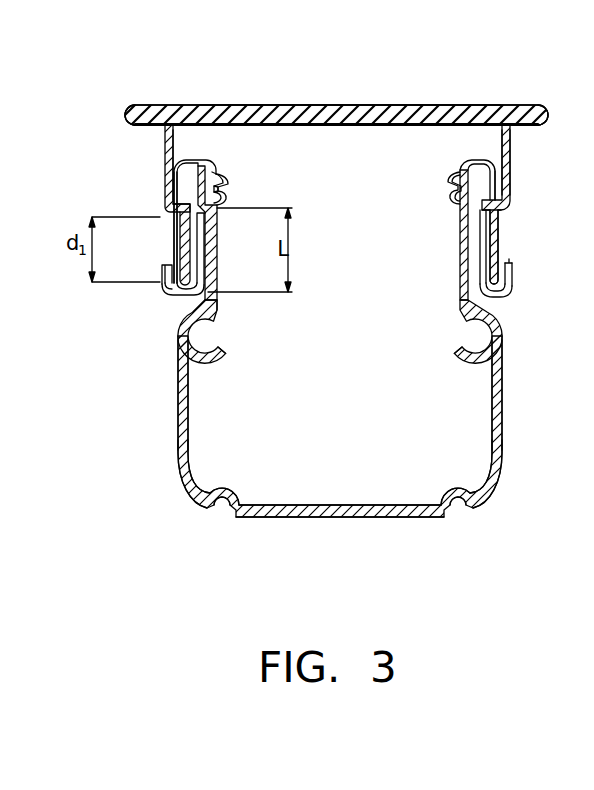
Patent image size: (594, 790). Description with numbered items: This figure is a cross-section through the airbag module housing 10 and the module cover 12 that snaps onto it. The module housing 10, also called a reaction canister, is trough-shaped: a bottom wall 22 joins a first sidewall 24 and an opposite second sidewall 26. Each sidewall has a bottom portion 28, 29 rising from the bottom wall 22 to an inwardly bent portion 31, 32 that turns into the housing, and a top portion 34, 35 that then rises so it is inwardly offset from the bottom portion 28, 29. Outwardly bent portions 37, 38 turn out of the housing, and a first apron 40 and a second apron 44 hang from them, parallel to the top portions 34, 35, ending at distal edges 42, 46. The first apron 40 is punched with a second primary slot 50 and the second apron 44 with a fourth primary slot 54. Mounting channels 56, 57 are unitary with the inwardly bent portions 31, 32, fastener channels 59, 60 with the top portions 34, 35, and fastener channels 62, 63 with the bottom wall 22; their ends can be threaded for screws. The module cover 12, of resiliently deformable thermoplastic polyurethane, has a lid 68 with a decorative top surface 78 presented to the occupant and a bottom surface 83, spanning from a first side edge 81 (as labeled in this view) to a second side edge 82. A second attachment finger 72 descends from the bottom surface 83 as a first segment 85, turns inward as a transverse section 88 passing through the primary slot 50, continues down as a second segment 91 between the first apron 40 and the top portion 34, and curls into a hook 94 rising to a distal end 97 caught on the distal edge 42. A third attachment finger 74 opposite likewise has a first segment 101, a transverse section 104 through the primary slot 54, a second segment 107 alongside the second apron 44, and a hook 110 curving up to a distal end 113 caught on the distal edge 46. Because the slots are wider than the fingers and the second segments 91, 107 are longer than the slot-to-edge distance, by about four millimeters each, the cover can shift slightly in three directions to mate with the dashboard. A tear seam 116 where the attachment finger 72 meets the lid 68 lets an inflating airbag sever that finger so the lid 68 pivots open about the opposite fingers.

The module housing 10 is at (313, 534).
The module cover 12 is at (295, 72).
The bottom wall 22 is at (347, 518).
The first sidewall 24 is at (177, 404).
The second sidewall 26 is at (503, 380).
The bottom portion 28 is at (178, 438).
The bottom portion 29 is at (505, 443).
The inwardly bent portion 31 is at (180, 340).
The inwardly bent portion 32 is at (504, 325).
The top portion 34 is at (219, 271).
The top portion 35 is at (459, 273).
The outwardly bent portion 37 is at (200, 161).
The outwardly bent portion 38 is at (477, 158).
The first apron 40 is at (174, 227).
The distal edge 42 is at (175, 296).
The second apron 44 is at (500, 248).
The distal edge 46 is at (503, 294).
The second primary slot 50 is at (163, 206).
The fourth primary slot 54 is at (500, 194).
The mounting channel 56 is at (224, 344).
The mounting channel 57 is at (456, 343).
The fastener channel 59 is at (228, 190).
The fastener channel 60 is at (452, 186).
The fastener channel 62 is at (225, 507).
The fastener channel 63 is at (470, 498).
The lid 68 is at (338, 104).
The second attachment finger 72 is at (162, 157).
The third attachment finger 74 is at (513, 157).
The top surface 78 is at (418, 104).
The left end 81 is at (125, 121).
The second side edge 82 is at (550, 112).
The bottom surface 83 is at (317, 127).
The first segment 85 is at (163, 180).
The transverse section 88 is at (223, 176).
The second segment 91 is at (206, 238).
The hook 94 is at (183, 310).
The distal end 97 is at (168, 266).
The first segment 101 is at (510, 181).
The transverse section 104 is at (509, 205).
The second segment 107 is at (476, 237).
The hook 110 is at (508, 286).
The distal end 113 is at (511, 262).
The tear seam 116 is at (163, 128).